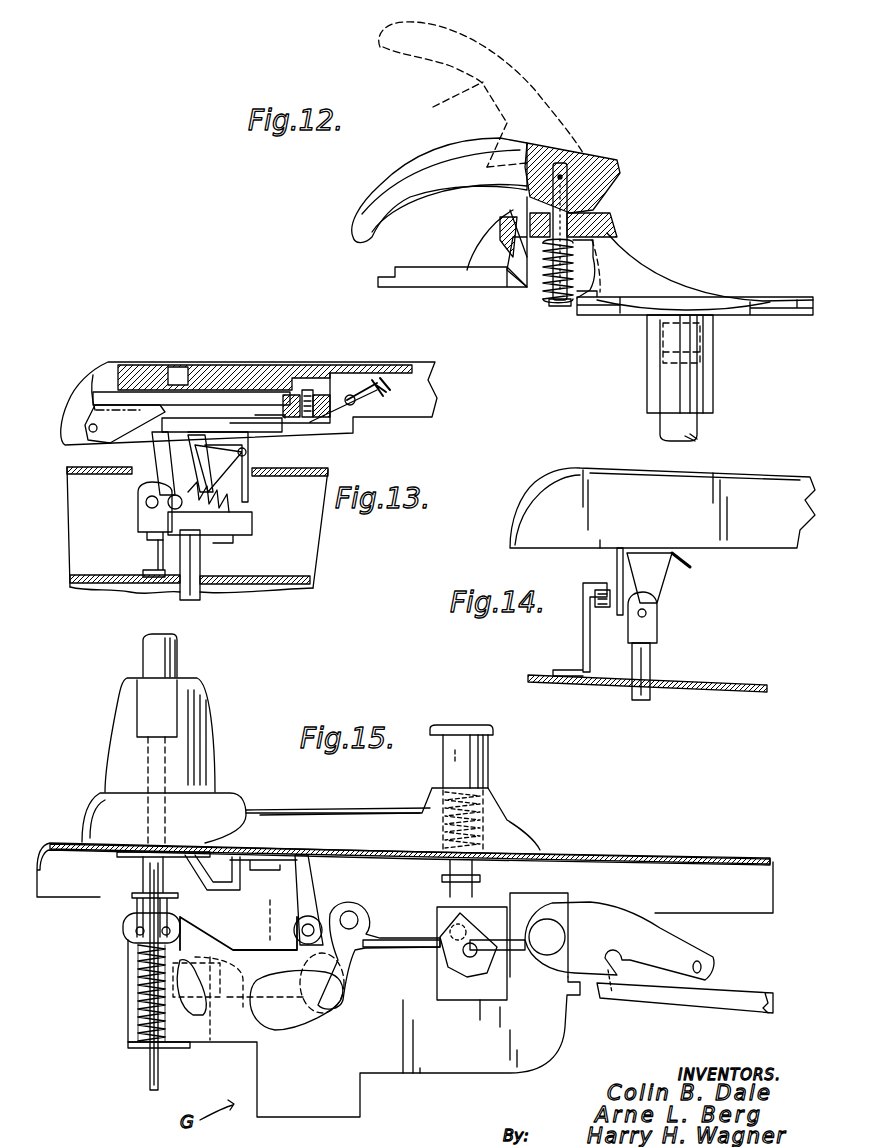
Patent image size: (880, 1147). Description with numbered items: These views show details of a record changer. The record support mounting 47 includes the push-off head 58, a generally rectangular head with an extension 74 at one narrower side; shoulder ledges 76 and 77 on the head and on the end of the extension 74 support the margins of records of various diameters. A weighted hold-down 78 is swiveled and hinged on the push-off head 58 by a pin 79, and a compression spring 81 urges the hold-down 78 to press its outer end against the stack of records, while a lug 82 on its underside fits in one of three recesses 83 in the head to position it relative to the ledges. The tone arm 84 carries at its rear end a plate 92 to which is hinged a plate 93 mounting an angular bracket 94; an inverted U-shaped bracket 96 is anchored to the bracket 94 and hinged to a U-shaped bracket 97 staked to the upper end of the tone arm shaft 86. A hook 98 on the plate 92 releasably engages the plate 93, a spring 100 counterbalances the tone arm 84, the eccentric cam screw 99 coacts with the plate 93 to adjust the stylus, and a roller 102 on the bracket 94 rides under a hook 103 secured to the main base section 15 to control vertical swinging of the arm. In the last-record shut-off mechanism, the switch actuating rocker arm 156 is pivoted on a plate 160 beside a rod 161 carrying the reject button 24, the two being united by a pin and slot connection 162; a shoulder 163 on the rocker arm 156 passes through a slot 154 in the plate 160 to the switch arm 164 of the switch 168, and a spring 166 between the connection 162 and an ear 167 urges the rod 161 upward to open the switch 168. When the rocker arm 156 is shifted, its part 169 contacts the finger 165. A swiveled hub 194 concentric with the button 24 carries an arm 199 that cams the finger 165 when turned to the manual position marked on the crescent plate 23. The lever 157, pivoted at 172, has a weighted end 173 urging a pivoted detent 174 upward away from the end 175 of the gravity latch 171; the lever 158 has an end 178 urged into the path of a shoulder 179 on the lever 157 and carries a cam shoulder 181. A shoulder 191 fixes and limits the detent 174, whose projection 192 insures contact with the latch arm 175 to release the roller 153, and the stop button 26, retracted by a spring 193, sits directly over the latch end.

In FIG. 12, the weighted hold-down 78 is at (447, 157).
In FIG. 12, the pin 79 is at (603, 214).
In FIG. 12, the lug 82 is at (520, 197).
In FIG. 12, the recesses 83 is at (497, 240).
In FIG. 12, the compression spring 81 is at (547, 282).
In FIG. 12, the shoulder ledge 76 is at (436, 269).
In FIG. 12, the extension 74 is at (418, 280).
In FIG. 12, the push-off head 58 is at (652, 280).
In FIG. 12, the shoulder ledge 77 is at (787, 315).
In FIG. 12, the record support mounting 47 is at (639, 382).
In FIG. 13, the tone arm 84 is at (262, 367).
In FIG. 14, the tone arm 84 is at (560, 483).
In FIG. 13, the plate 92 is at (113, 400).
In FIG. 13, the plate 93 is at (200, 385).
In FIG. 13, the eccentric cam screw 99 is at (303, 390).
In FIG. 13, the hook 98 is at (382, 400).
In FIG. 13, the angular bracket 94 is at (215, 425).
In FIG. 14, the angular bracket 94 is at (616, 573).
In FIG. 13, the inverted U-shaped bracket 96 is at (160, 472).
In FIG. 14, the inverted U-shaped bracket 96 is at (657, 577).
In FIG. 13, the spring 100 is at (232, 492).
In FIG. 14, the spring 100 is at (668, 598).
In FIG. 13, the U-shaped bracket 97 is at (147, 520).
In FIG. 14, the U-shaped bracket 97 is at (655, 630).
In FIG. 13, the hook 103 is at (168, 553).
In FIG. 14, the hook 103 is at (572, 629).
In FIG. 13, the tone arm shaft 86 is at (193, 560).
In FIG. 14, the tone arm shaft 86 is at (648, 660).
In FIG. 13, the main base section 15 is at (282, 583).
In FIG. 14, the main base section 15 is at (697, 683).
In FIG. 15, the main base section 15 is at (403, 870).
In FIG. 14, the roller 102 is at (603, 610).
In FIG. 15, the reject button 24 is at (145, 655).
In FIG. 15, the swiveled hub 194 is at (200, 720).
In FIG. 15, the crescent plate 23 is at (90, 820).
In FIG. 15, the plate 160 is at (390, 1073).
In FIG. 15, the arm 199 is at (203, 888).
In FIG. 15, the finger 165 is at (270, 867).
In FIG. 15, the rod 161 is at (150, 873).
In FIG. 15, the pin and slot connection 162 is at (140, 935).
In FIG. 15, the spring 166 is at (137, 985).
In FIG. 15, the ear 167 is at (135, 1047).
In FIG. 15, the slot 154 is at (240, 952).
In FIG. 15, the switch 168 is at (258, 915).
In FIG. 15, the part 169 is at (307, 888).
In FIG. 15, the roller 153 is at (322, 915).
In FIG. 15, the gravity latch 171 is at (350, 1000).
In FIG. 15, the end of gravity latch 175 is at (403, 950).
In FIG. 15, the shoulder 163 is at (207, 998).
In FIG. 15, the switch arm 164 is at (212, 1035).
In FIG. 15, the switch actuating rocker arm 156 is at (240, 1000).
In FIG. 15, the projection 192 is at (430, 932).
In FIG. 15, the cam shoulder 181 is at (468, 945).
In FIG. 15, the shoulder 191 is at (450, 990).
In FIG. 15, the lever 157 is at (562, 977).
In FIG. 15, the weighted end 173 is at (688, 951).
In FIG. 15, the pivot 172 is at (550, 937).
In FIG. 15, the end of lever 178 is at (655, 998).
In FIG. 15, the shoulder 179 is at (612, 995).
In FIG. 15, the lever 158 is at (760, 993).
In FIG. 15, the stop button 26 is at (493, 733).
In FIG. 15, the spring 193 is at (478, 808).
In FIG. 15, the detent 174 is at (470, 935).